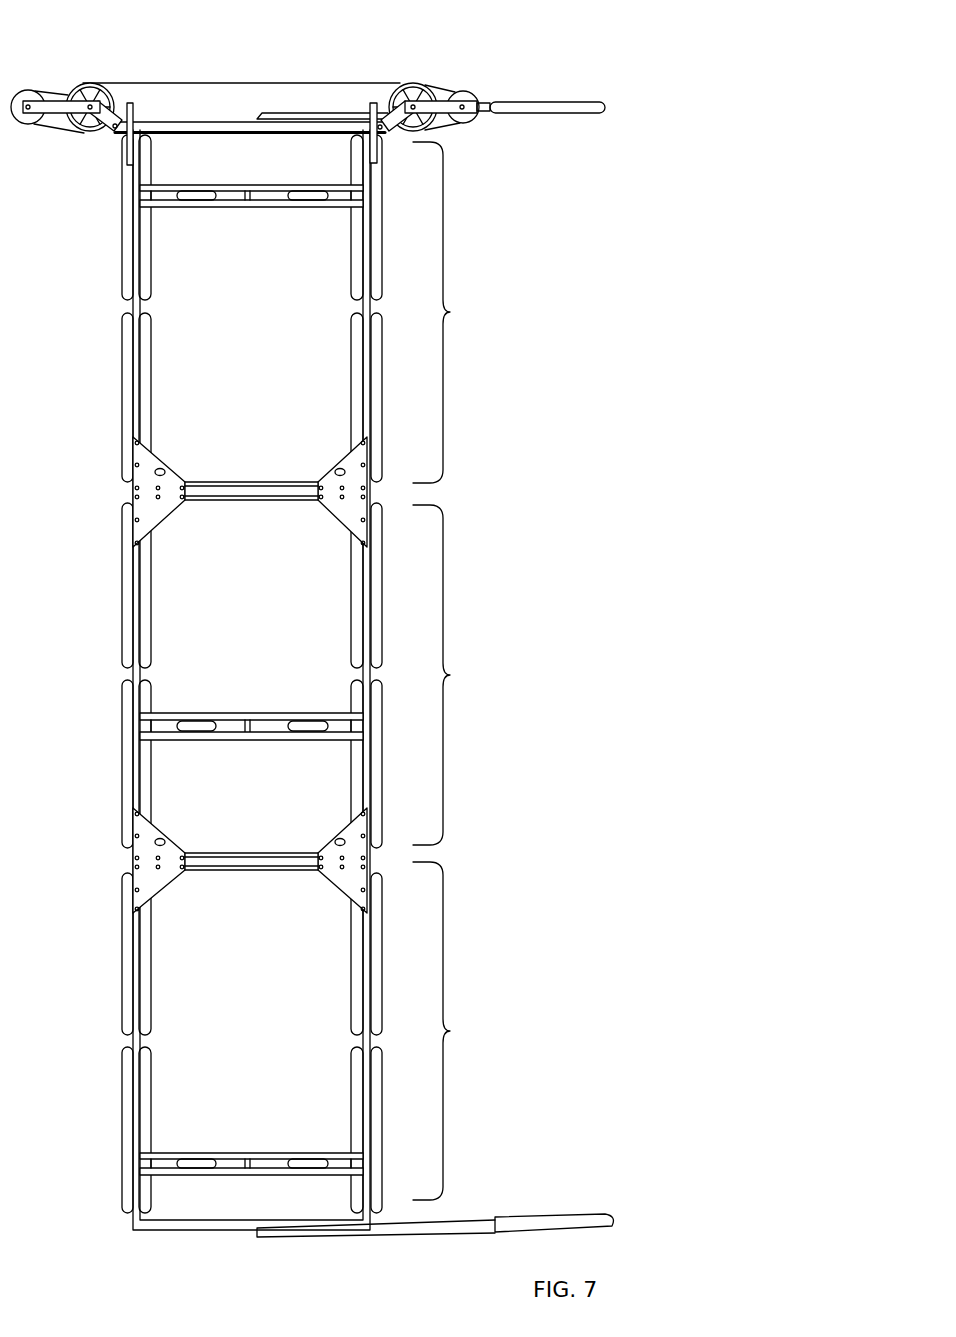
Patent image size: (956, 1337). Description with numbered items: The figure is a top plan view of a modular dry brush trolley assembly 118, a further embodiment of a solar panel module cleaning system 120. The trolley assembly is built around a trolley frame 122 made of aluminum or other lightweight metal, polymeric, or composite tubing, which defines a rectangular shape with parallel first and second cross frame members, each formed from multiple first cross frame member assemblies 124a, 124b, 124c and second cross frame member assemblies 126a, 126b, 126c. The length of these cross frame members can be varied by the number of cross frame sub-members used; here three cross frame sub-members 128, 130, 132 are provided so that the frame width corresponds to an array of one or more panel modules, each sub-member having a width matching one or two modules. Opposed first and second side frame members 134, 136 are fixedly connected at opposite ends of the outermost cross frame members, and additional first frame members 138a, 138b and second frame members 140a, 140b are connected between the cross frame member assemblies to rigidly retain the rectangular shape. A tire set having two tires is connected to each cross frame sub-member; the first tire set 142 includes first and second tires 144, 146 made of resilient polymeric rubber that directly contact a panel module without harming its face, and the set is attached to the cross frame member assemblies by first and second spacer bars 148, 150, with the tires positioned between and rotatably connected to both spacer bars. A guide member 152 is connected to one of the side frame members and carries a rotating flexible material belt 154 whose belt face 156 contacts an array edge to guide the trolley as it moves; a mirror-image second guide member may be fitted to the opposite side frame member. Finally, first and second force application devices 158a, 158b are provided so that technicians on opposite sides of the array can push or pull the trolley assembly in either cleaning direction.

The modular dry brush trolley assembly 118 is at (354, 656).
The solar panel module cleaning system 120 is at (354, 95).
The trolley frame 122 is at (250, 484).
The first cross frame member assembly 124a is at (130, 312).
The first cross frame member assembly 124b is at (130, 680).
The first cross frame member assembly 124c is at (130, 1047).
The second cross frame member assembly 126a is at (360, 312).
The second cross frame member assembly 126b is at (360, 680).
The second cross frame member assembly 126c is at (360, 1047).
The cross frame sub-member 128 is at (457, 312).
The cross frame sub-member 130 is at (457, 675).
The cross frame sub-member 132 is at (457, 1031).
The first side frame member 134 is at (213, 135).
The second side frame member 136 is at (180, 1232).
The first frame member 138a is at (254, 482).
The first frame member 138b is at (252, 853).
The second frame member 140a is at (254, 500).
The second frame member 140b is at (250, 870).
The first tire set 142 is at (251, 245).
The first tire 144 is at (200, 207).
The second tire 146 is at (318, 207).
The first spacer bar 148 is at (251, 732).
The second spacer bar 150 is at (192, 741).
The guide member 152 is at (245, 107).
The rotating flexible material belt 154 is at (140, 82).
The belt face 156 is at (106, 141).
The first force application device 158a is at (572, 106).
The second force application device 158b is at (466, 1238).